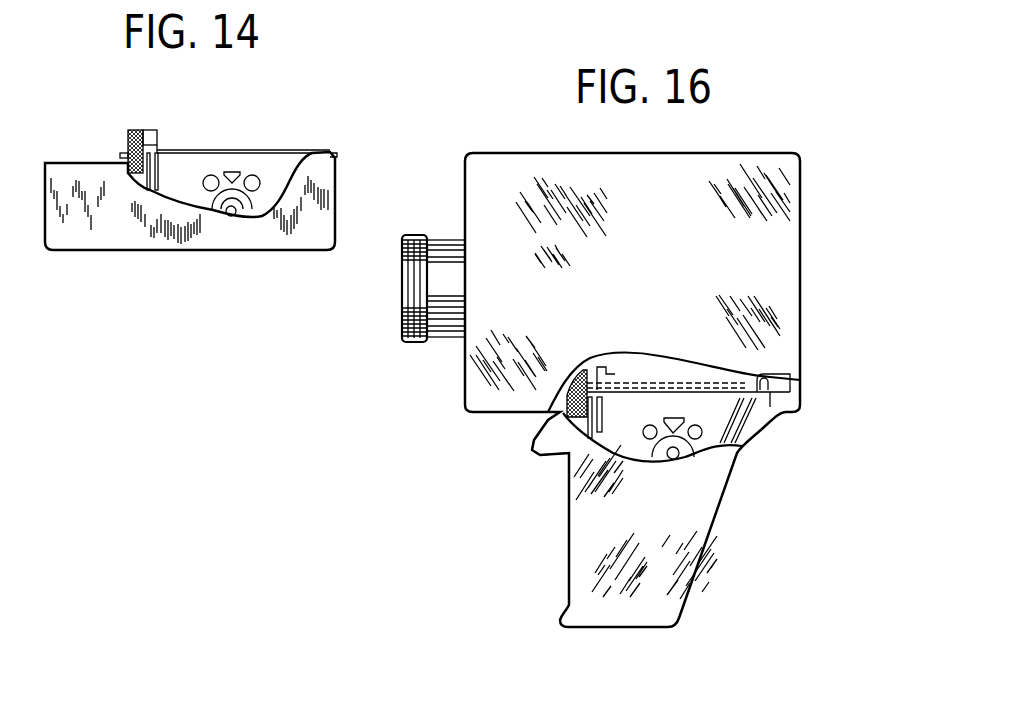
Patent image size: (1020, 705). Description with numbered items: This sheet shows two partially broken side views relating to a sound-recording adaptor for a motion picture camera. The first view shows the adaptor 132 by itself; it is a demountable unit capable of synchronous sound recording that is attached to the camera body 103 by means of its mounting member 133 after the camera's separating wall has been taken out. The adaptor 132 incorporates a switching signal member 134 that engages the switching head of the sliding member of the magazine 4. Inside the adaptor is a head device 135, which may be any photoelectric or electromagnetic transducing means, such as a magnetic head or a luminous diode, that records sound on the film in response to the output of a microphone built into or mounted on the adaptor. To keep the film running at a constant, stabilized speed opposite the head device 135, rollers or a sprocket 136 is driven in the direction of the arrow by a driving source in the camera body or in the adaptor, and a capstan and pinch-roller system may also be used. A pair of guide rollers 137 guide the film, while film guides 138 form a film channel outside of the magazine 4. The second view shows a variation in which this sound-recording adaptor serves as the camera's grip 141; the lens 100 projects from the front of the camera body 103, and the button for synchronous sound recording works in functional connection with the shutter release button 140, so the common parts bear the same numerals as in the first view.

In FIG. 16, the magazine 4 is at (700, 370).
In FIG. 16, the lens 100 is at (448, 257).
In FIG. 16, the camera body 103 is at (763, 220).
In FIG. 14, the adaptor 132 is at (102, 233).
In FIG. 14, the mounting member 133 is at (128, 150).
In FIG. 14, the switching signal member 134 is at (150, 130).
In FIG. 14, the head device 135 is at (230, 170).
In FIG. 16, the head device 135 is at (673, 418).
In FIG. 14, the sprocket 136 is at (243, 212).
In FIG. 16, the sprocket 136 is at (687, 453).
In FIG. 14, the guide rollers 137 is at (255, 177).
In FIG. 16, the guide rollers 137 is at (652, 440).
In FIG. 16, the film guides 138 is at (603, 417).
In FIG. 16, the shutter release button 140 is at (535, 443).
In FIG. 16, the handle grip 141 is at (697, 487).